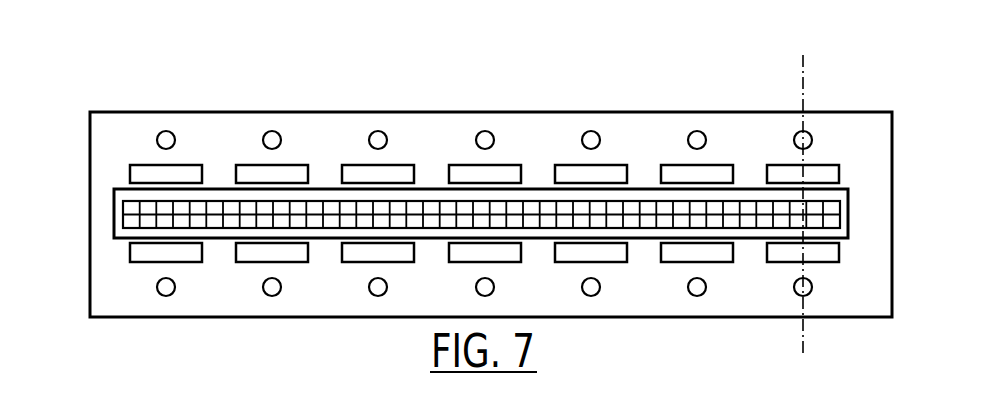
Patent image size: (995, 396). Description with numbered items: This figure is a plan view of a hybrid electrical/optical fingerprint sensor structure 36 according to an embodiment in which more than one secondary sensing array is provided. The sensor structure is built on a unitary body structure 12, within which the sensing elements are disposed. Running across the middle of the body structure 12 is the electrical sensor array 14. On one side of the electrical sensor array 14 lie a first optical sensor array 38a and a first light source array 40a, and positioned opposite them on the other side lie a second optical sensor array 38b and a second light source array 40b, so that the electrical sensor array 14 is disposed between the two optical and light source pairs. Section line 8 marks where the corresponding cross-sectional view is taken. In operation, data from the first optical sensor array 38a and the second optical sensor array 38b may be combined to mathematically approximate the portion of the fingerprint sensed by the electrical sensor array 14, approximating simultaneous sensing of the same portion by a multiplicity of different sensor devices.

The hybrid electrical/optical fingerprint sensor structure 36 is at (455, 184).
The unitary body structure 12 is at (333, 318).
The electrical sensor array 14 is at (113, 214).
The first optical sensor array 38a is at (80, 243).
The second optical sensor array 38b is at (80, 165).
The first light source array 40a is at (80, 277).
The second light source array 40b is at (80, 128).
The section line 8- 8 is at (803, 55).